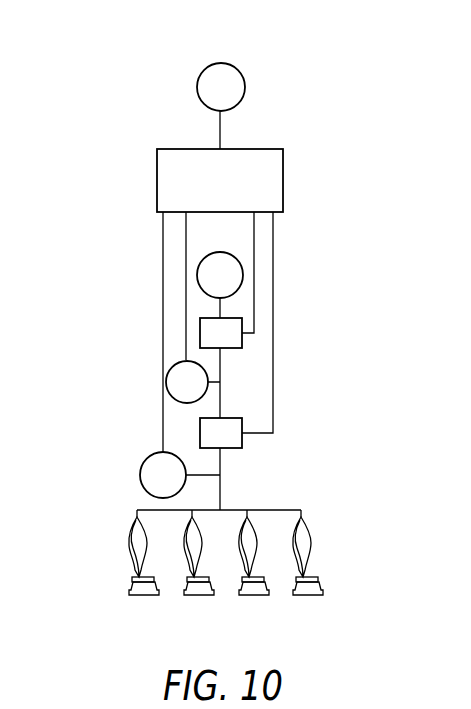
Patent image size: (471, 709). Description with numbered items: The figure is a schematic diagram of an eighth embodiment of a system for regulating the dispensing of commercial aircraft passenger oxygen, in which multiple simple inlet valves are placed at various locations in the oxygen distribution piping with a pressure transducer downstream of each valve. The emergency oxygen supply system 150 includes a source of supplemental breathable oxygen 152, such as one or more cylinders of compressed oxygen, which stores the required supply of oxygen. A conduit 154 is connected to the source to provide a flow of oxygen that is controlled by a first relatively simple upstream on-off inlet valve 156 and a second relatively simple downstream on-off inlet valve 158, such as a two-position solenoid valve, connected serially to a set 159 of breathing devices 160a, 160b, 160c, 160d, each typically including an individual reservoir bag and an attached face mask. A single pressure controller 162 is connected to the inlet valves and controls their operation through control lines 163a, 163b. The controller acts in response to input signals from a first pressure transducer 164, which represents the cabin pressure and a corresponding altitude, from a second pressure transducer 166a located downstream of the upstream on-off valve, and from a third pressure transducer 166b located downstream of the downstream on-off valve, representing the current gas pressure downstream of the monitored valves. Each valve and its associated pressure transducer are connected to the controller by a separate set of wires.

The emergency oxygen supply system 150 is at (268, 120).
The source of supplemental breathable oxygen 152 is at (206, 258).
The conduit 154 is at (218, 307).
The first upstream on-off inlet valve V1 156 is at (200, 335).
The second downstream on-off inlet valve V2 158 is at (200, 433).
The set of breathing devices 159 is at (317, 532).
The breathing device 160a is at (130, 557).
The breathing device 160b is at (203, 595).
The breathing device 160c is at (255, 595).
The fourth nozzle 160d is at (312, 541).
The pressure controller 162 is at (207, 149).
The control line 163a is at (255, 270).
The control line 163b is at (273, 318).
The first pressure transducer PA 164 is at (198, 91).
The second pressure transducer P1 166a is at (173, 363).
The second pressure sensor 166b is at (141, 474).